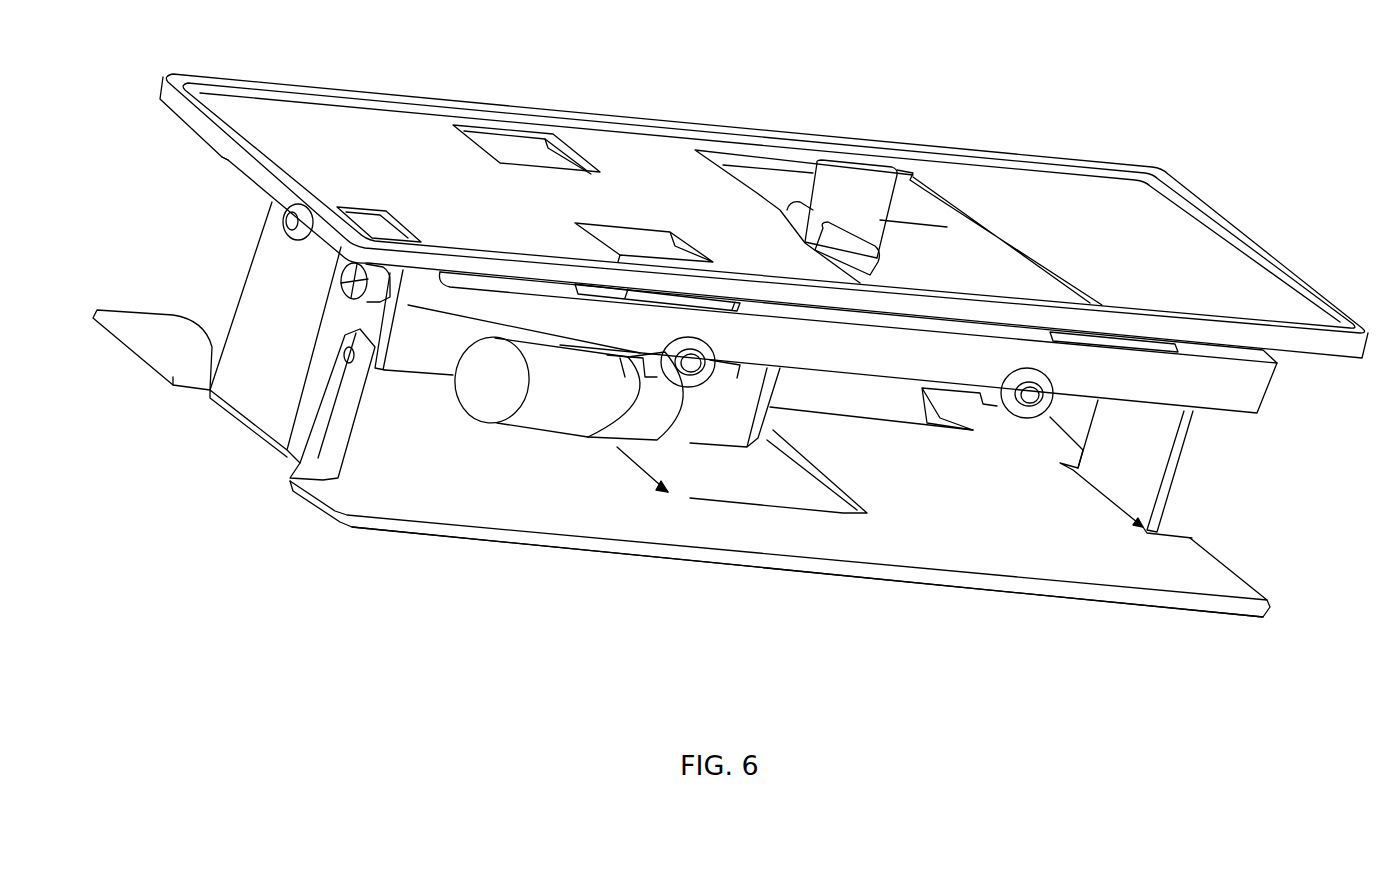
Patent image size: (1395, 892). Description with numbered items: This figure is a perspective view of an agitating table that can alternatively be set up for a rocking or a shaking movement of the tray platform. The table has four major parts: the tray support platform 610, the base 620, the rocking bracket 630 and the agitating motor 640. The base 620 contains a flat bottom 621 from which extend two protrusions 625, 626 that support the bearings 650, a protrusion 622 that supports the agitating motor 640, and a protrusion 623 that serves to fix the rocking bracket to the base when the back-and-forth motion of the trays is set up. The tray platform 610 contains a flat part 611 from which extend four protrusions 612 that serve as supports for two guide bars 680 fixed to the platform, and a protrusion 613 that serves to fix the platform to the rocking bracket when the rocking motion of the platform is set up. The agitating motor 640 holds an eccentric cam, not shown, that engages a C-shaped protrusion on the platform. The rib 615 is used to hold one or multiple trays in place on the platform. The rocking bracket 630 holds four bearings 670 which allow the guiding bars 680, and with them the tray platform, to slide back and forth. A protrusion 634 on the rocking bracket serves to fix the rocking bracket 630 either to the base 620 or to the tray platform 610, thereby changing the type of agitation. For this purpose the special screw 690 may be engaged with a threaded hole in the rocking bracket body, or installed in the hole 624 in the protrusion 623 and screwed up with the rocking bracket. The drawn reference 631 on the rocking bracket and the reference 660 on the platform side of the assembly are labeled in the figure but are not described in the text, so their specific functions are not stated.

The tray support platform 610 is at (1245, 232).
The flat part 611 is at (287, 117).
The protrusions 612 is at (531, 148).
The protrusion 613 is at (377, 216).
The rib 615 is at (687, 128).
The base 620 is at (1268, 604).
The flat bottom 621 is at (600, 552).
The protrusion 622 is at (777, 430).
The protrusion 623 is at (327, 425).
The hole 624 is at (344, 356).
The protrusion 625 is at (262, 250).
The protrusion 626 is at (1185, 433).
The rocking bracket 630 is at (1262, 410).
The rail bottom 631 is at (890, 382).
The protrusion 634 is at (375, 312).
The agitating motor 640 is at (544, 430).
The bearings 650 is at (272, 200).
The boss 660 is at (284, 220).
The bearings 670 is at (1050, 390).
The guide bars 680 is at (1025, 415).
The special screw 690 is at (342, 290).